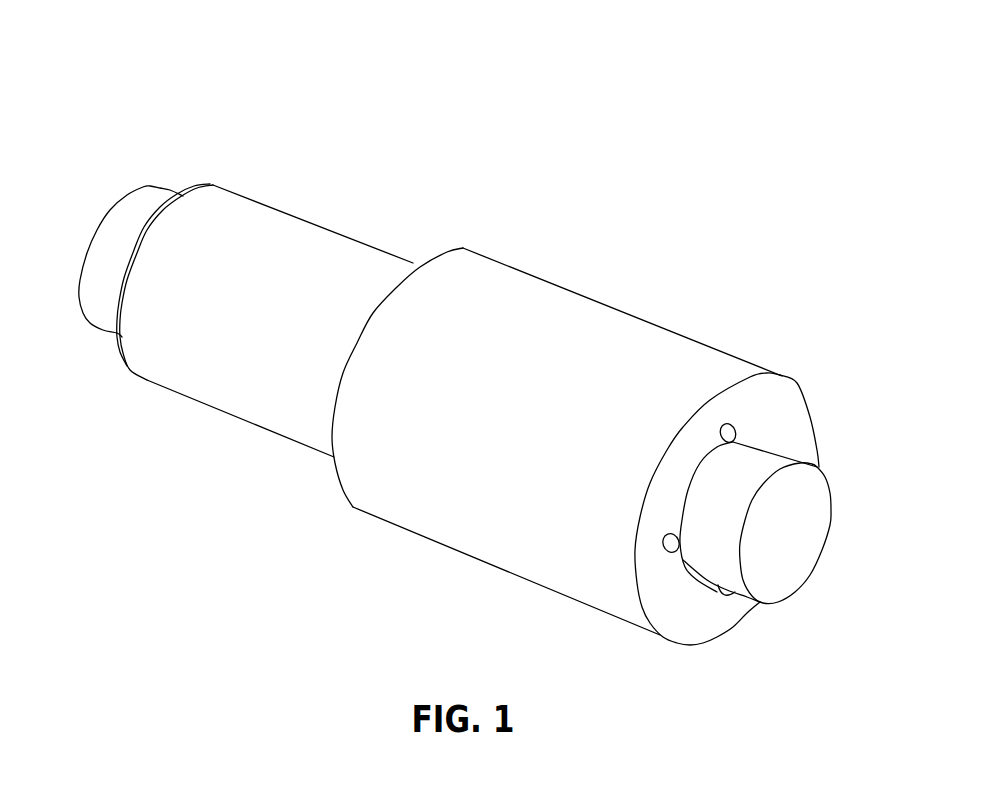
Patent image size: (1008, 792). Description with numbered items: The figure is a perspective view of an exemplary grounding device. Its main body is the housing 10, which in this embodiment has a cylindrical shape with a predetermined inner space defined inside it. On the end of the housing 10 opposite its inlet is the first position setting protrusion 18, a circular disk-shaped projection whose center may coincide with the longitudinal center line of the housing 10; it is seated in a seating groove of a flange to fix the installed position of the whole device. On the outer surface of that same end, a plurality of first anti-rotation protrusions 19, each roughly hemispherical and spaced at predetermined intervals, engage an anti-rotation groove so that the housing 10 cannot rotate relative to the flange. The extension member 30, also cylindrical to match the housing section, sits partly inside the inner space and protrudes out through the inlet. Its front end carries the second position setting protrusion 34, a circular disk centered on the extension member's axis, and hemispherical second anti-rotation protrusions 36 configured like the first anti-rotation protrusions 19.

The housing 10 is at (607, 302).
The first position setting protrusion 18 is at (793, 553).
The first anti-rotation protrusions 19 is at (732, 442).
The extension member 30 is at (310, 218).
The second position setting protrusion 34 is at (148, 197).
The second anti-rotation protrusions 36 is at (117, 321).